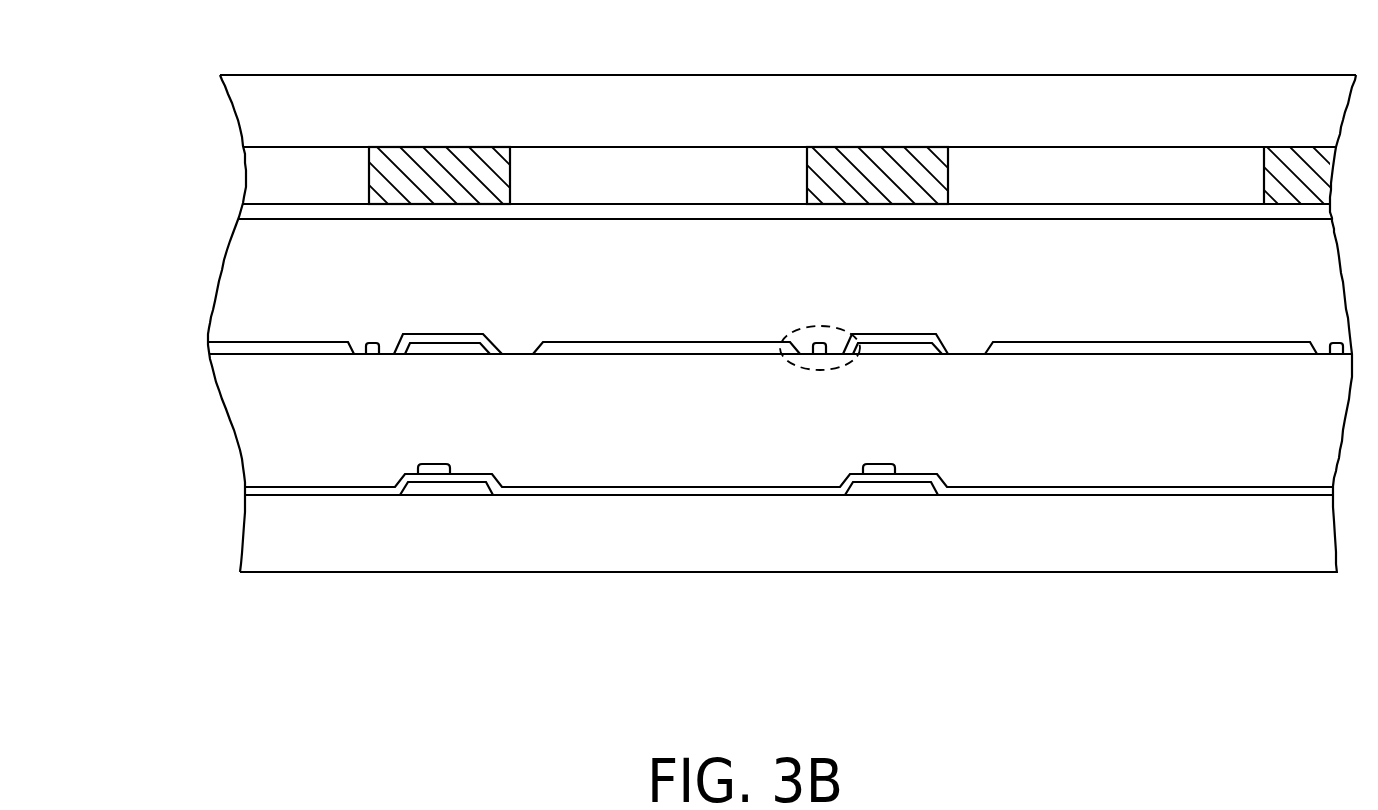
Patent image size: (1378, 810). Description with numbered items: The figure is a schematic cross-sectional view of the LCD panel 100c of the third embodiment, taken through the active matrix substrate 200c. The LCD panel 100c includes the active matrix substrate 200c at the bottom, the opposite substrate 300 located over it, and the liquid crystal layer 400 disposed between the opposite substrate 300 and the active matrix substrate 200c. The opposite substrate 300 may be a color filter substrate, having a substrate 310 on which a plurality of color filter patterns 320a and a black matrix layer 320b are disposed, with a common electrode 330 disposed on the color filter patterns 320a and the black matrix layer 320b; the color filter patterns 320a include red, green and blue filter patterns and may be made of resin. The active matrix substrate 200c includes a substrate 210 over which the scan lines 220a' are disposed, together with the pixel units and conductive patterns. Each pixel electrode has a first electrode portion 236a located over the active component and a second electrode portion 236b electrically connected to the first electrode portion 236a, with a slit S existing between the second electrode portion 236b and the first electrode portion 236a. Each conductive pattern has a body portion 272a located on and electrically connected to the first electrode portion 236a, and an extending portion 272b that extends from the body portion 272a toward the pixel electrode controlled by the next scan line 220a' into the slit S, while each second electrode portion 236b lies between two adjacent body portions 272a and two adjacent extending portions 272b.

The LCD panel 100c is at (1220, 672).
The active matrix substrate 200c is at (180, 464).
The substrate 210 is at (254, 540).
The scan line 220a' is at (789, 549).
The first electrode portion 236a is at (438, 348).
The second electrode portion 236b is at (212, 347).
The body portion 272a is at (478, 336).
The extending portion 272b is at (373, 343).
The opposite substrate 300 is at (118, 95).
The substrate 310 is at (232, 106).
The color filter patterns 320a is at (246, 169).
The black matrix layer 320b is at (369, 180).
The common electrode 330 is at (241, 212).
The liquid crystal layer 400 is at (217, 297).
The slit S is at (820, 370).